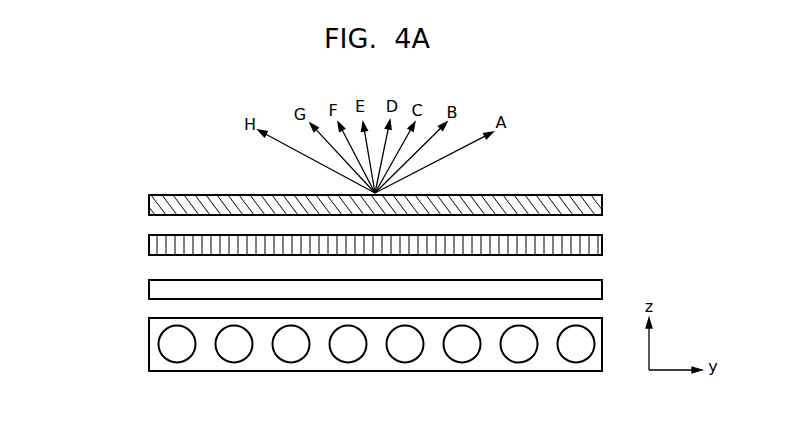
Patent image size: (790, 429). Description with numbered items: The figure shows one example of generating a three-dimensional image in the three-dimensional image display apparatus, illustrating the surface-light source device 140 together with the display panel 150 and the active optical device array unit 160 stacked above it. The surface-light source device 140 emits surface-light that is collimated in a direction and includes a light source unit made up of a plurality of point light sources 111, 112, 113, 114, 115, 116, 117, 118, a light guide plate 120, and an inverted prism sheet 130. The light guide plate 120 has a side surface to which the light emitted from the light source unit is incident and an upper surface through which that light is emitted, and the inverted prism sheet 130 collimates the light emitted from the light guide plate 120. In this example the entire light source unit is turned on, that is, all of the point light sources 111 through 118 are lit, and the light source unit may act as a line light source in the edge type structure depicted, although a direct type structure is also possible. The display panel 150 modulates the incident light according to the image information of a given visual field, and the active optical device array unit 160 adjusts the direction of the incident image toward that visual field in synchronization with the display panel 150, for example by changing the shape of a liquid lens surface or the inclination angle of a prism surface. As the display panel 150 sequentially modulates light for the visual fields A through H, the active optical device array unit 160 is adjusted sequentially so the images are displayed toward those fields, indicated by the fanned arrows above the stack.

The point light source 111 is at (177, 362).
The point light source 112 is at (234, 362).
The point light source 113 is at (291, 362).
The point light source 114 is at (348, 362).
The point light source 115 is at (405, 362).
The point light source 116 is at (462, 362).
The point light source 117 is at (519, 362).
The point light source 118 is at (576, 362).
The light guide plate 120 is at (155, 345).
The inverted prism sheet 130 is at (155, 290).
The surface-light source device 140 is at (73, 282).
The display panel 150 is at (155, 246).
The active optical device array unit 160 is at (155, 207).